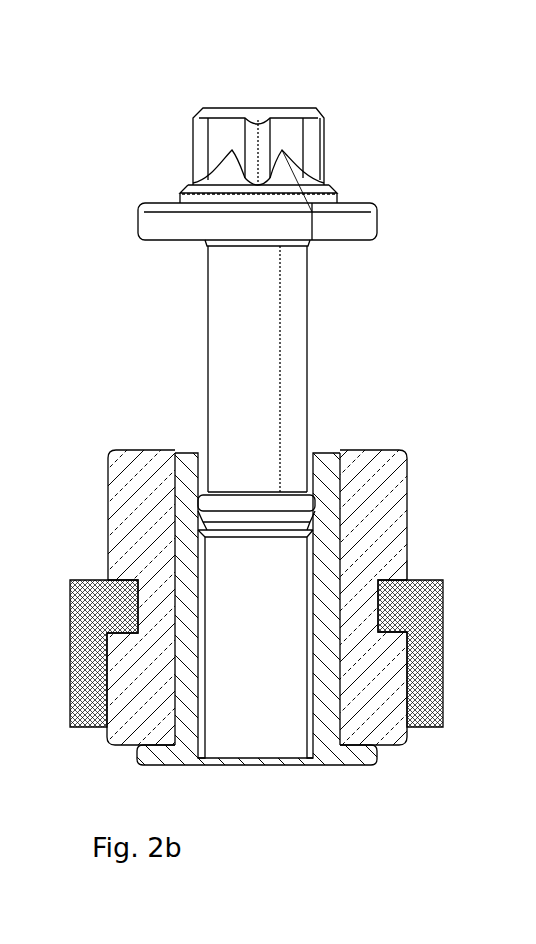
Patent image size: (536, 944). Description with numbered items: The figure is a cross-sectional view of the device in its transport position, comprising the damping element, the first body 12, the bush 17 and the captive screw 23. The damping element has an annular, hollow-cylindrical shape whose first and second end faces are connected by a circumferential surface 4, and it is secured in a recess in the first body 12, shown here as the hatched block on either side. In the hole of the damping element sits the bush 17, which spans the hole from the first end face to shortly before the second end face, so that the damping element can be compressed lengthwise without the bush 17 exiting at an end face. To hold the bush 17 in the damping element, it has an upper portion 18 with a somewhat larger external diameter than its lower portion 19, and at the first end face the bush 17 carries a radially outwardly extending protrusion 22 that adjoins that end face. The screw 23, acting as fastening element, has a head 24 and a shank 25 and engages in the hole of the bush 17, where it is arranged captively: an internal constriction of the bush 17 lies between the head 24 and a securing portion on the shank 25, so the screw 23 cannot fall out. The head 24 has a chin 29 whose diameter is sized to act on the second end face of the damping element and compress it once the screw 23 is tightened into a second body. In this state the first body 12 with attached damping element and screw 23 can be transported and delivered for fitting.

The screw 23 is at (264, 86).
The head 24 is at (200, 143).
The chin 29 is at (352, 241).
The shank 25 is at (218, 305).
The circumferential surface 4 is at (133, 498).
The bush 17 is at (185, 597).
The upper portion 18 is at (330, 512).
The lower portion 19 is at (410, 557).
The first body 12 is at (442, 620).
The protrusion 22 is at (353, 757).